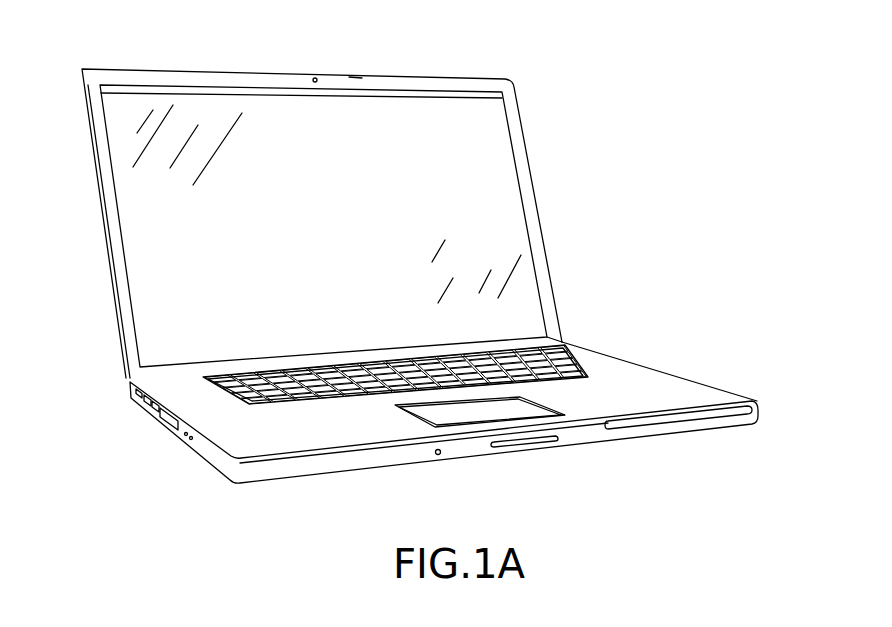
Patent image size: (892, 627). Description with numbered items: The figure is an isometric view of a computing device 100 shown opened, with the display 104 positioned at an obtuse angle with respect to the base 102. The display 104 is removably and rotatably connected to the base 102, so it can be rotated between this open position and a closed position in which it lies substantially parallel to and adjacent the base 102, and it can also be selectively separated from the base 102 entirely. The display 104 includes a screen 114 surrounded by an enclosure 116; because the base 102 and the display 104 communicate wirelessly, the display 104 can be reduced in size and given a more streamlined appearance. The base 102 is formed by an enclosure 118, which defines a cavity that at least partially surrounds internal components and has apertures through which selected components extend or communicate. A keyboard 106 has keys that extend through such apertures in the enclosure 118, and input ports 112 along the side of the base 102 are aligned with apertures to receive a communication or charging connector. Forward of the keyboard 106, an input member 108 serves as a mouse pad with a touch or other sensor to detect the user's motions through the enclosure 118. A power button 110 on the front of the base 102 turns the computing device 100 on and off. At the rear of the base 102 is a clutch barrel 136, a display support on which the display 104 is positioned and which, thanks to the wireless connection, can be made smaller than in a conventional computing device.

The computing device 100 is at (612, 234).
The base 102 is at (677, 354).
The display 104 is at (565, 181).
The keyboard 106 is at (540, 363).
The input member 108 is at (418, 417).
The power button 110 is at (527, 445).
The input ports 112 is at (160, 425).
The screen 114 is at (507, 144).
The enclosure 116 is at (498, 84).
The enclosure 118 is at (708, 396).
The clutch barrel 136 is at (387, 352).